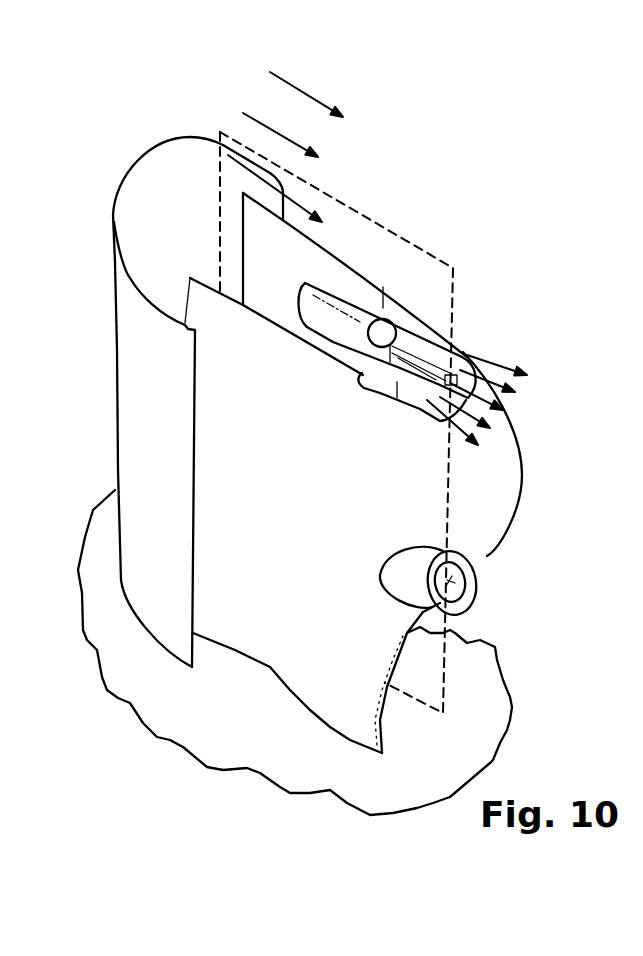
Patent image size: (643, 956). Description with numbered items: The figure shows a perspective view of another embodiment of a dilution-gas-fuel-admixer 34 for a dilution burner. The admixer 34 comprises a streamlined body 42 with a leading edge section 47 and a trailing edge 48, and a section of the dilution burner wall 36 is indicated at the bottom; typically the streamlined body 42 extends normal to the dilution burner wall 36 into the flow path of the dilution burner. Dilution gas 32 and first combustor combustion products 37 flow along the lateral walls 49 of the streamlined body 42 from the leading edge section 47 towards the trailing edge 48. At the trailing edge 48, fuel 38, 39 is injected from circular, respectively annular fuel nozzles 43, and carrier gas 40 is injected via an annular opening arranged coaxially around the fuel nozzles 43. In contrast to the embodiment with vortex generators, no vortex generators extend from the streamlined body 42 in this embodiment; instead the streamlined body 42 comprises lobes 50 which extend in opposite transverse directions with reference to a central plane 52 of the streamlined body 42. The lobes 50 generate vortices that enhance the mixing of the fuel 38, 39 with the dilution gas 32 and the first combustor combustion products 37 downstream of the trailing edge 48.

The dilution gas 32 is at (290, 188).
The dilution-gas-fuel-admixer 34 is at (318, 387).
The dilution burner wall 36 is at (302, 752).
The first combustor combustion products 37 is at (280, 109).
The fuel 38 is at (496, 413).
The fuel 39 is at (495, 410).
The carrier gas 40 is at (497, 416).
The streamlined body 42 is at (315, 515).
The fuel nozzle 43 is at (450, 583).
The leading edge section 47 is at (133, 410).
The trailing edge 48 is at (388, 687).
The lateral wall 49 is at (247, 313).
The lobe 50 is at (358, 628).
The central plane 52 is at (438, 292).